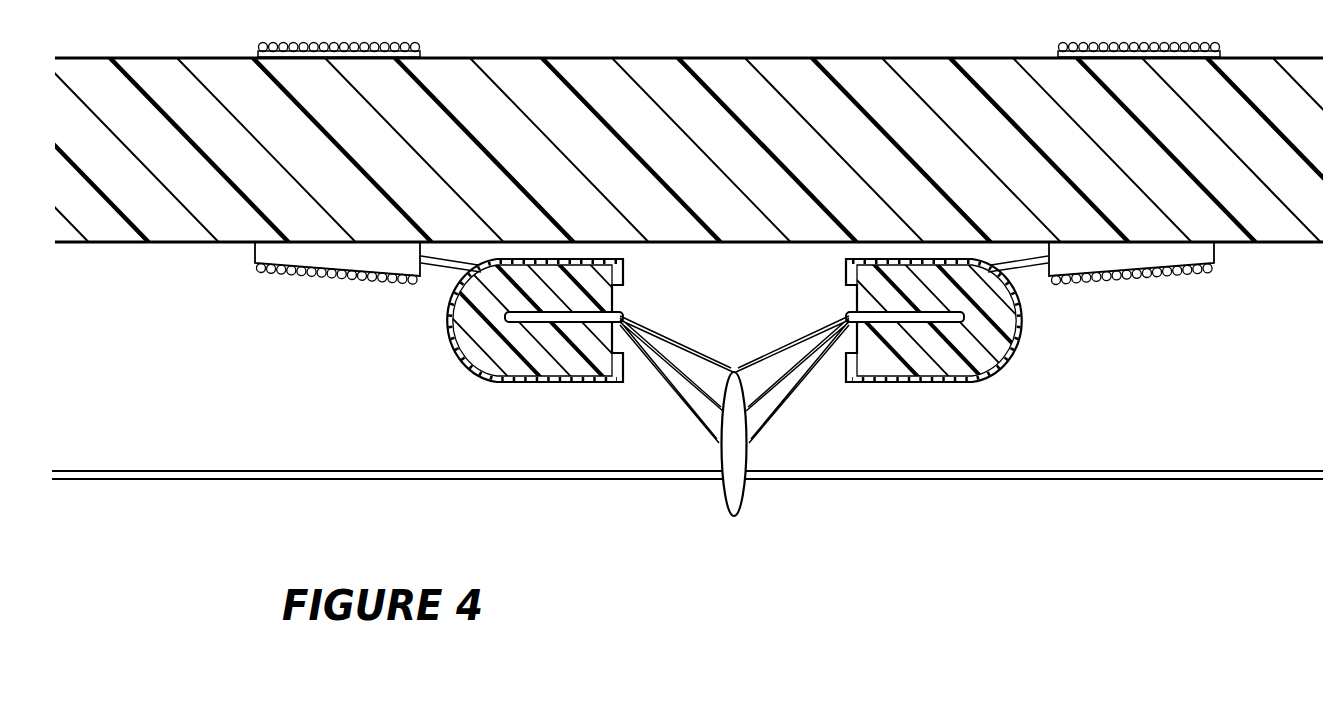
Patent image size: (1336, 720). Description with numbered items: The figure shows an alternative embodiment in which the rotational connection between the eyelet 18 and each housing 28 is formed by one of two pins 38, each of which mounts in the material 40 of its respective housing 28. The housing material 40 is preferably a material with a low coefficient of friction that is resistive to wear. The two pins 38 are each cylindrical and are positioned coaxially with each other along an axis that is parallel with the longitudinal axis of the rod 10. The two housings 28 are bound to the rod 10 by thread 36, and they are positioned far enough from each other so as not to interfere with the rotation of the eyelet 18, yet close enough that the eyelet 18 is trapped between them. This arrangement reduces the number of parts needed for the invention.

The rod 10 is at (578, 162).
The eyelet 18 is at (758, 530).
The housing 28 is at (1027, 398).
The thread 36 is at (1167, 310).
The pin 38 is at (879, 312).
The housing material 40 is at (928, 406).